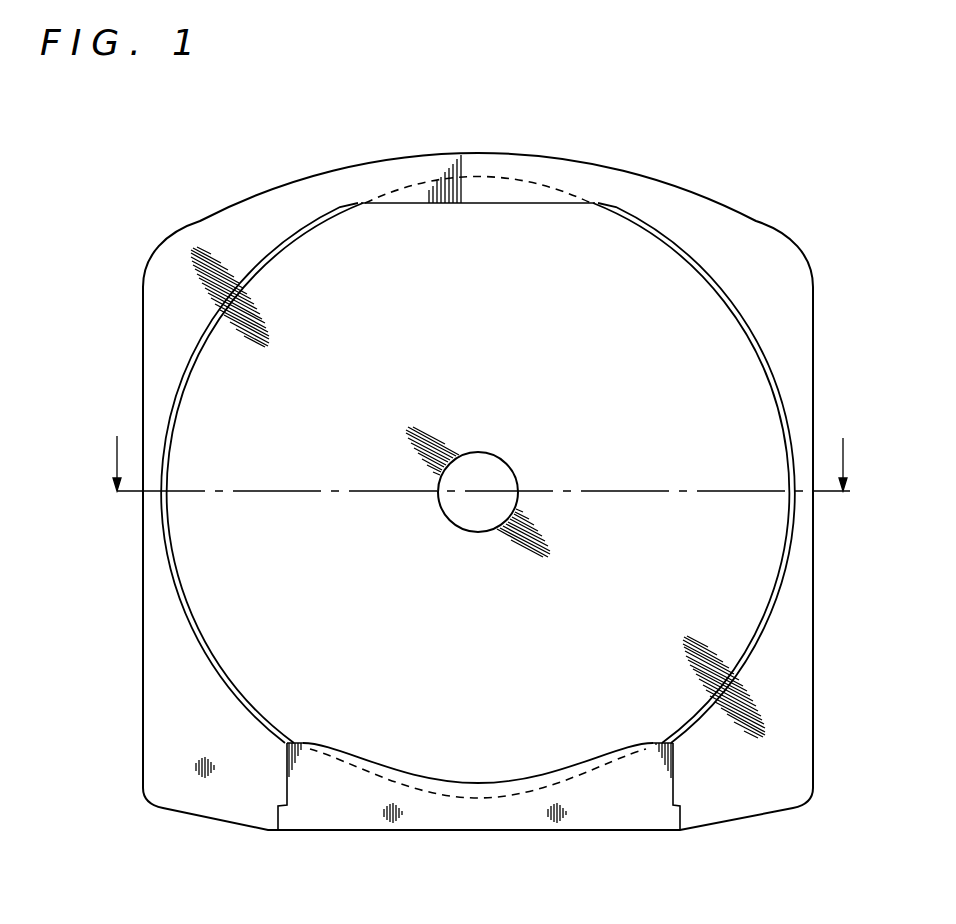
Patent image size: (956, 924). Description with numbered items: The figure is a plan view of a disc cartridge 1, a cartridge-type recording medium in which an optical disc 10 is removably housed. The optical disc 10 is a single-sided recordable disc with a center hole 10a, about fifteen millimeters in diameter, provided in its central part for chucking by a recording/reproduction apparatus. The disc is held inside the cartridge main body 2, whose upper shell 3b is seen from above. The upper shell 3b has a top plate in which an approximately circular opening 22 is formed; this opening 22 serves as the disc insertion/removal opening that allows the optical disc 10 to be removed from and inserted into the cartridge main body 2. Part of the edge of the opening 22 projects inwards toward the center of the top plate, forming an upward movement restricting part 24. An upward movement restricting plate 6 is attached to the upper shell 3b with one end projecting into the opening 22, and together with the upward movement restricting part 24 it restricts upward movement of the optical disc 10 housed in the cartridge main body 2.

The disc cartridge 1 is at (471, 121).
The cartridge main body 2 is at (720, 186).
The upper shell 3b is at (795, 737).
The upward movement restricting plate 6 is at (602, 813).
The optical disc 10 is at (549, 252).
The center hole 10a is at (480, 475).
The opening 22 is at (298, 281).
The upward movement restricting part 24 is at (483, 194).